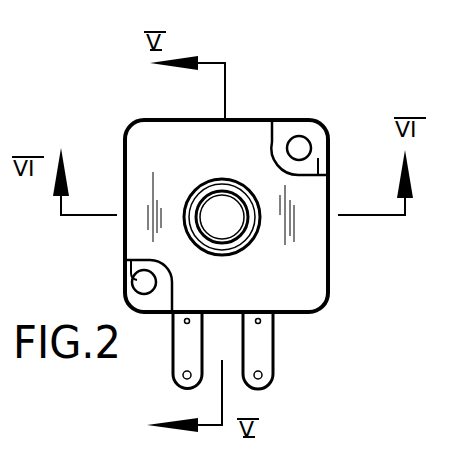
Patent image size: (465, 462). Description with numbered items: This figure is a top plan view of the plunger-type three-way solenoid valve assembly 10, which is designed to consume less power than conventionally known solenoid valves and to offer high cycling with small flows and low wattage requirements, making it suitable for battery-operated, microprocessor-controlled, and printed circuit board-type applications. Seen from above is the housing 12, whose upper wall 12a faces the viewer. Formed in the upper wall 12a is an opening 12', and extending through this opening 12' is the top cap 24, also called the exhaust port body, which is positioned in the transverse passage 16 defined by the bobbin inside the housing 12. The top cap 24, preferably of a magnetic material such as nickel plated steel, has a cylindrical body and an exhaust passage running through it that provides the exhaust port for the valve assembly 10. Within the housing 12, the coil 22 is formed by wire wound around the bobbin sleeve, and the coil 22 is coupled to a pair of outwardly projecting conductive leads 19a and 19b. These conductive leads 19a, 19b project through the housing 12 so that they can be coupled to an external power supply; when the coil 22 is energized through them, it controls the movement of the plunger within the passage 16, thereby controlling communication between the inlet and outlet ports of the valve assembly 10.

The solenoid valve assembly 10 is at (309, 94).
The housing 12 is at (268, 216).
The upper wall 12a is at (288, 268).
The opening 12' is at (282, 191).
The transverse passage 16 is at (232, 192).
The coil 22 is at (188, 207).
The top cap 24 is at (212, 208).
The conductive lead 19a is at (173, 345).
The conductive lead 19b is at (273, 355).